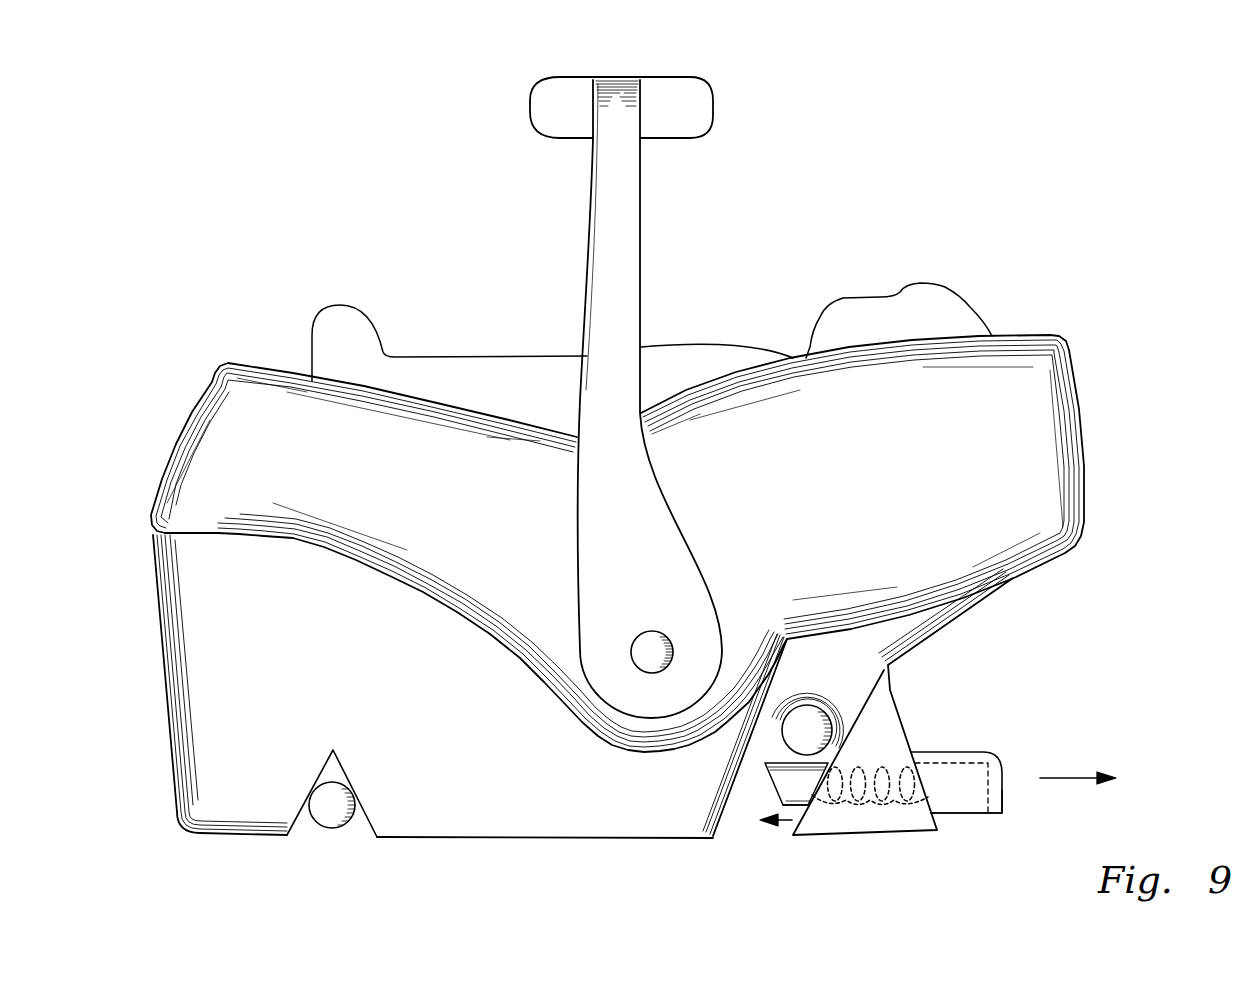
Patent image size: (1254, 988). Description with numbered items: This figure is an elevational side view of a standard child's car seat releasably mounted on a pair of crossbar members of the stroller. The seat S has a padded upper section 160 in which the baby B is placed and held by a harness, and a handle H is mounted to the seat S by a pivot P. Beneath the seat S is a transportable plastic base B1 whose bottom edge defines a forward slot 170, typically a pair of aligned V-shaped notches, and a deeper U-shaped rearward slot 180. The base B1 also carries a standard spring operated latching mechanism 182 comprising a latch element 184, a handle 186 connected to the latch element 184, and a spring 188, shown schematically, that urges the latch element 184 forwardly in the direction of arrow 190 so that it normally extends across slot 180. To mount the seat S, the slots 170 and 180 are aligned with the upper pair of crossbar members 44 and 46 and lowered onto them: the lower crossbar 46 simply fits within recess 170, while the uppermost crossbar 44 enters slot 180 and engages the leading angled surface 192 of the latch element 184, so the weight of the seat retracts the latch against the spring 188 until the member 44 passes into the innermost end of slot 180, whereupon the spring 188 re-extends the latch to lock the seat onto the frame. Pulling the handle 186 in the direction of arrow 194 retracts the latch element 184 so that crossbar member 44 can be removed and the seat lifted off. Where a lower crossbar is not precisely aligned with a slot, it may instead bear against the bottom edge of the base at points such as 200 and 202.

The handle H is at (596, 77).
The seat S is at (310, 280).
The baby B is at (786, 312).
The transportable plastic base B1 is at (918, 657).
The pivot P is at (672, 650).
The padded upper section 160 is at (263, 422).
The forward slot 170 is at (340, 761).
The crossbar member 46 is at (330, 804).
The crossbar member 44 is at (812, 728).
The rearward slot 180 is at (768, 753).
The latch element 184 is at (782, 774).
The latching mechanism 182 is at (996, 757).
The handle 186 is at (1002, 800).
The spring 188 is at (860, 797).
The arrow 190 is at (792, 822).
The leading angled surface 192 is at (778, 797).
The arrow 194 is at (1068, 778).
The point on bottom edge of base 200 is at (258, 837).
The point on bottom edge of base 202 is at (418, 838).